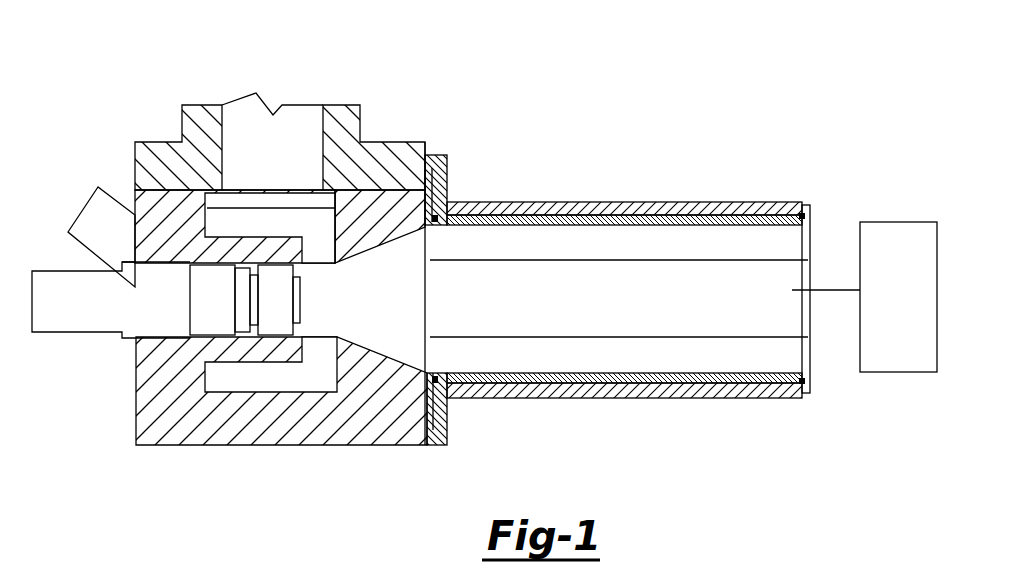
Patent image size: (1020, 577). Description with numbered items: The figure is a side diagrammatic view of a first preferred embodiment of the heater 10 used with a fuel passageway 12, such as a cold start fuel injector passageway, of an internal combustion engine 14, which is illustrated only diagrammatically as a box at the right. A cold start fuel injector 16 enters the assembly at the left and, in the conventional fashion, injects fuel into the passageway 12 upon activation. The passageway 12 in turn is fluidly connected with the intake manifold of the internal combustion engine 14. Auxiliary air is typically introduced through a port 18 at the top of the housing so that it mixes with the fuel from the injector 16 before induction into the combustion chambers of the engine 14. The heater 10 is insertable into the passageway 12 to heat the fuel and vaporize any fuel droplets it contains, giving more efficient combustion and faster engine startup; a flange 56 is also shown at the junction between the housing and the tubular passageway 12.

The heater 10 is at (620, 243).
The fuel passageway 12 is at (627, 304).
The internal combustion engine 14 is at (913, 304).
The cold start fuel injector 16 is at (63, 323).
The port 18 is at (318, 124).
The flange 56 is at (443, 405).